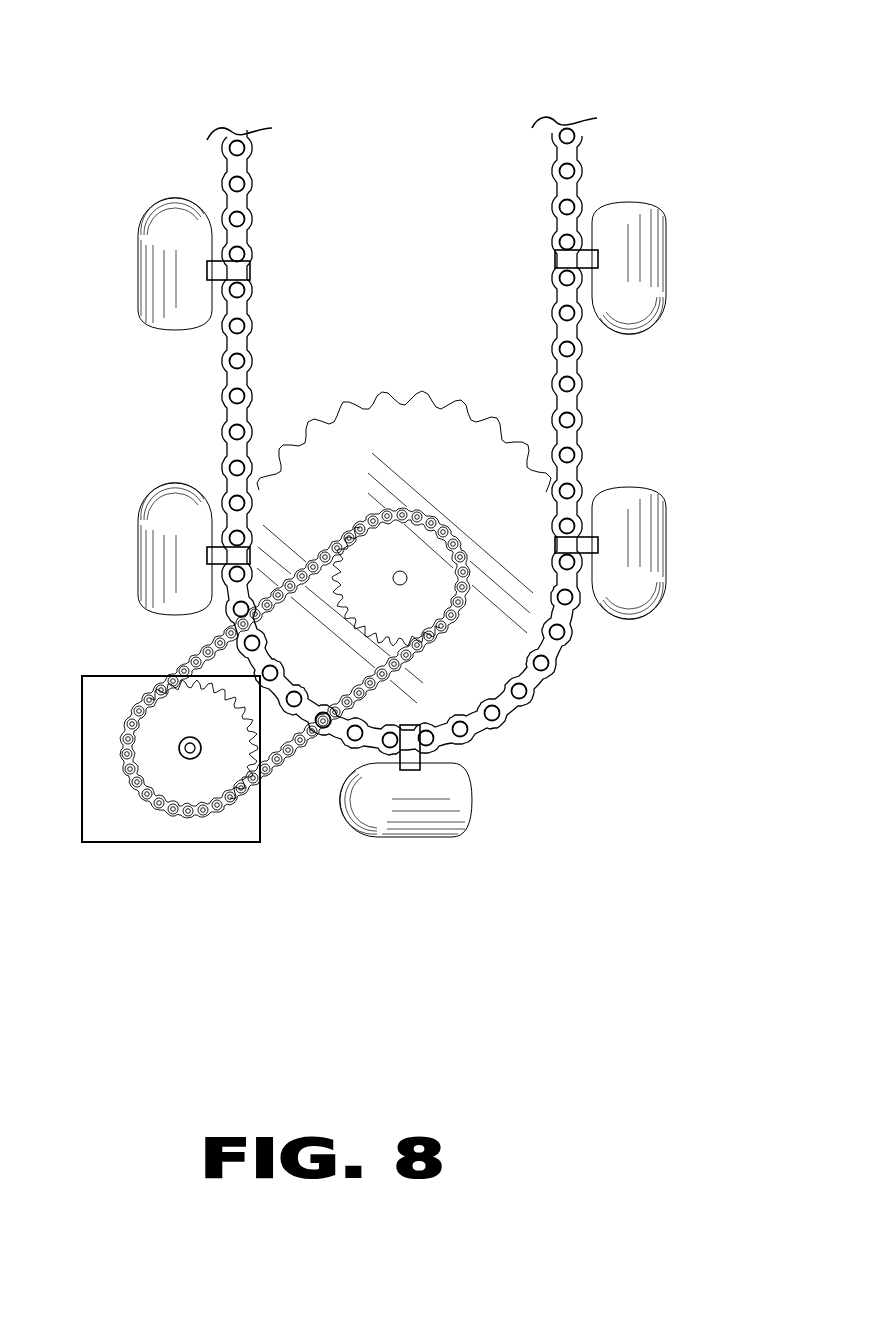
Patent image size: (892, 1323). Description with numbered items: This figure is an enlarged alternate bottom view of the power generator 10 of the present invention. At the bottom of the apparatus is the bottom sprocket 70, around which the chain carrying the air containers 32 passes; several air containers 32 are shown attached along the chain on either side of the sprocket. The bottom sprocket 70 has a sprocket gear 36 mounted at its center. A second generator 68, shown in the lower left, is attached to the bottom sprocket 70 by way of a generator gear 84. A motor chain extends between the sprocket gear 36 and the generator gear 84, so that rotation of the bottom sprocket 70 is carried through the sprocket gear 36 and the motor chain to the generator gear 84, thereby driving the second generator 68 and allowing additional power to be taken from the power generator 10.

The power generator 10 is at (396, 460).
The air container 32 is at (665, 532).
The sprocket gear 36 is at (392, 586).
The generator 68 is at (112, 845).
The sprocket 70 is at (425, 489).
The generator gear 84 is at (165, 736).